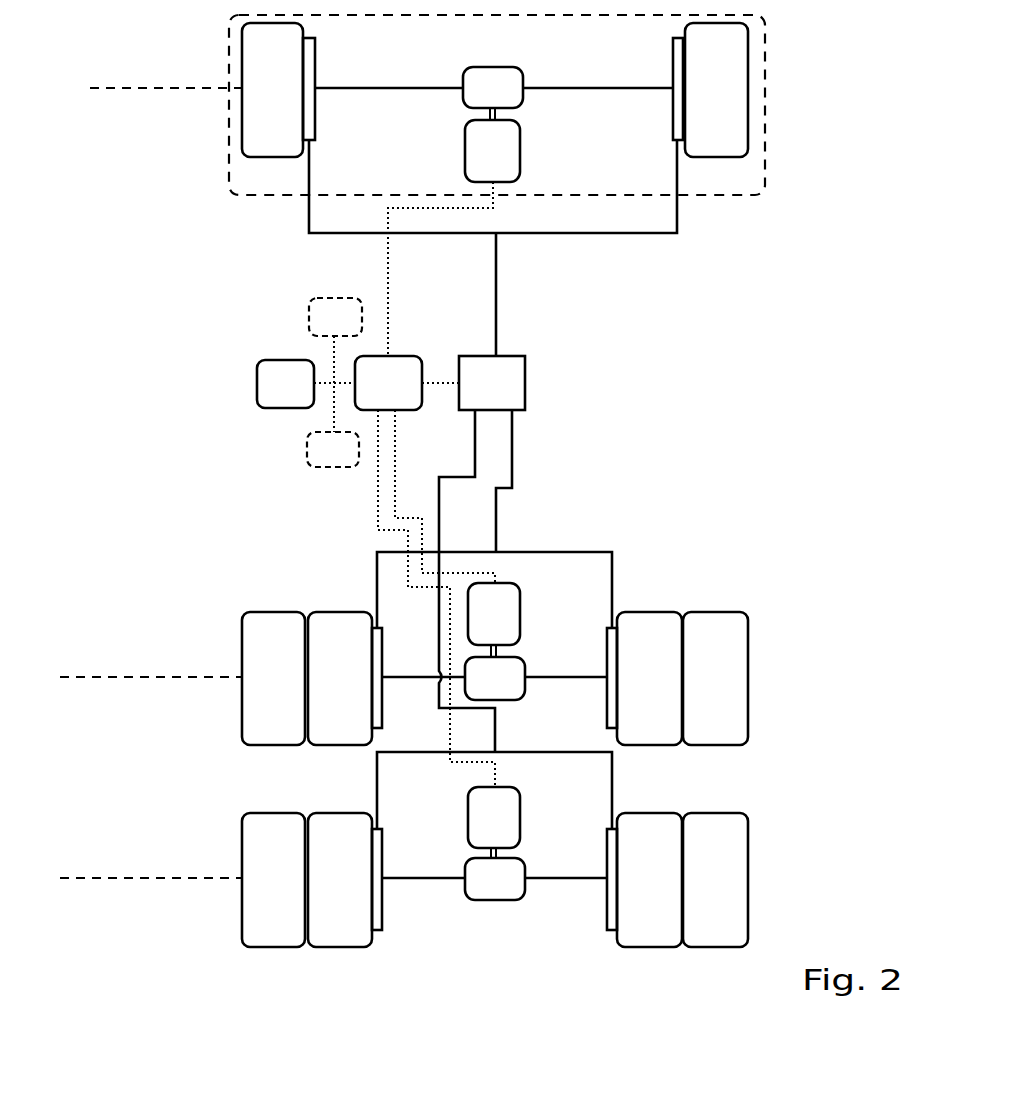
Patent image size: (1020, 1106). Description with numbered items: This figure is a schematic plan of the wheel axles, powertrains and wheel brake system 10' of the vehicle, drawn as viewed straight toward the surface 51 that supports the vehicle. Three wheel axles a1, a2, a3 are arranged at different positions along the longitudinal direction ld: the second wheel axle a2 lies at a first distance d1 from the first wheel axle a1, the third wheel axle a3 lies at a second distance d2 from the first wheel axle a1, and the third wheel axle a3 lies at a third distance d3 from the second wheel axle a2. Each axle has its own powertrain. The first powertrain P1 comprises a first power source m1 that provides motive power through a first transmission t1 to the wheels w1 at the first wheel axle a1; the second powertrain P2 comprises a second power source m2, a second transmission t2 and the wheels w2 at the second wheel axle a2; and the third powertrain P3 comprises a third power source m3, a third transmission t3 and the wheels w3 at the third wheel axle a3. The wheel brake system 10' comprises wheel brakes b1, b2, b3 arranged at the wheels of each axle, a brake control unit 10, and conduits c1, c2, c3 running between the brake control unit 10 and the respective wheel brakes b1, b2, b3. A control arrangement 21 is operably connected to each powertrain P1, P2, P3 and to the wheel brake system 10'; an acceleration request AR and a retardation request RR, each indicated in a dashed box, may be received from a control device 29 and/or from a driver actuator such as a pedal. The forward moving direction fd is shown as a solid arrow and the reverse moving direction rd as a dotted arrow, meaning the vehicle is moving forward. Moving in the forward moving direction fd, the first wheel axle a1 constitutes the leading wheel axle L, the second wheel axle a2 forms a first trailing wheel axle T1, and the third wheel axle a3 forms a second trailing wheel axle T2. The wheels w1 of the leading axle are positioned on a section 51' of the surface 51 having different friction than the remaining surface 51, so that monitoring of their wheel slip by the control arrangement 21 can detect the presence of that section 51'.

The wheel brake system 10' is at (868, 45).
The section of the surface 51' is at (527, 107).
The surface 51 is at (749, 291).
The wheels w1 is at (277, 141).
The wheel brakes b1 is at (315, 112).
The first transmission t1 is at (508, 102).
The first power source m1 is at (514, 166).
The first powertrain P1 is at (444, 146).
The conduit c1 is at (497, 258).
The acceleration request AR is at (335, 317).
The retardation request RR is at (333, 449).
The control device 29 is at (304, 398).
The control arrangement 21 is at (407, 398).
The brake control unit 10 is at (492, 383).
The longitudinal direction ld is at (651, 322).
The forward moving direction fd is at (651, 384).
The reverse moving direction rd is at (651, 440).
The conduit c2 is at (497, 518).
The conduit c3 is at (496, 726).
The wheels w2 is at (324, 612).
The wheel brakes b2 is at (382, 699).
The second transmission t2 is at (510, 692).
The second power source m2 is at (515, 630).
The second powertrain P2 is at (532, 613).
The wheels w3 is at (324, 816).
The wheel brakes b3 is at (382, 906).
The third transmission t3 is at (510, 893).
The third power source m3 is at (515, 833).
The third powertrain P3 is at (532, 813).
The leading wheel axle L is at (104, 86).
The first trailing wheel axle T1 is at (75, 674).
The second trailing wheel axle T2 is at (75, 876).
The first distance d1 is at (164, 88).
The second distance d2 is at (147, 878).
The third distance d3 is at (164, 677).
The first wheel axle a1 is at (193, 90).
The second wheel axle a2 is at (193, 681).
The third wheel axle a3 is at (193, 882).